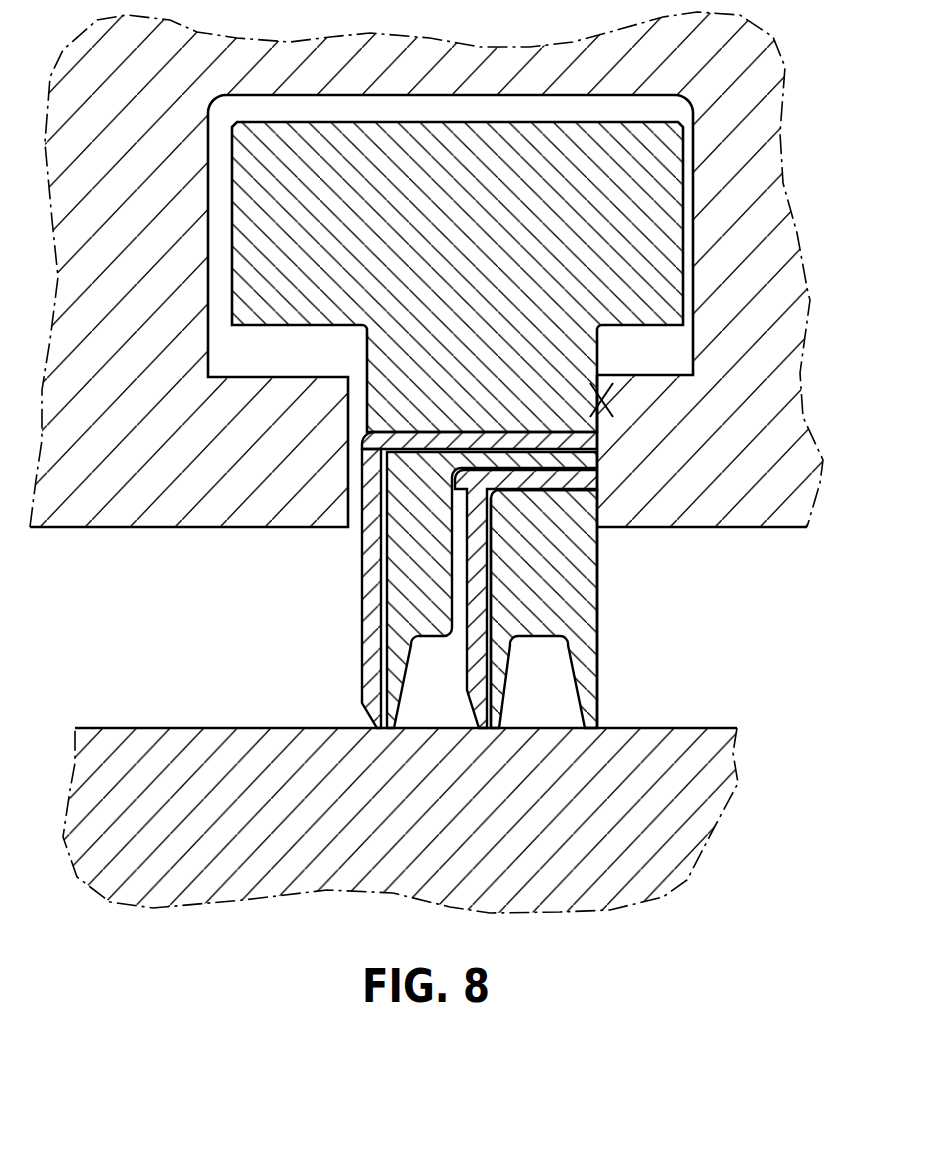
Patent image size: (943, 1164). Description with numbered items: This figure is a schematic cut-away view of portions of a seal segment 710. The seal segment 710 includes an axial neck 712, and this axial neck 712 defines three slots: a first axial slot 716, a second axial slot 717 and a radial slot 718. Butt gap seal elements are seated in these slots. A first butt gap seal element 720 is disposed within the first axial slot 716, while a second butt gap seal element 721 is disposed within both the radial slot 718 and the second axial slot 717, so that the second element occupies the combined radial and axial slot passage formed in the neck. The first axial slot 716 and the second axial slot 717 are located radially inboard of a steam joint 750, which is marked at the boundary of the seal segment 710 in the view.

The seal segment 710 is at (545, 122).
The axial neck 712 is at (443, 499).
The first axial slot 716 is at (505, 420).
The second axial slot 717 is at (534, 502).
The radial slot 718 is at (510, 563).
The first butt gap seal element 720 is at (372, 568).
The second butt gap seal element 721 is at (473, 592).
The steam joint 750 is at (605, 400).